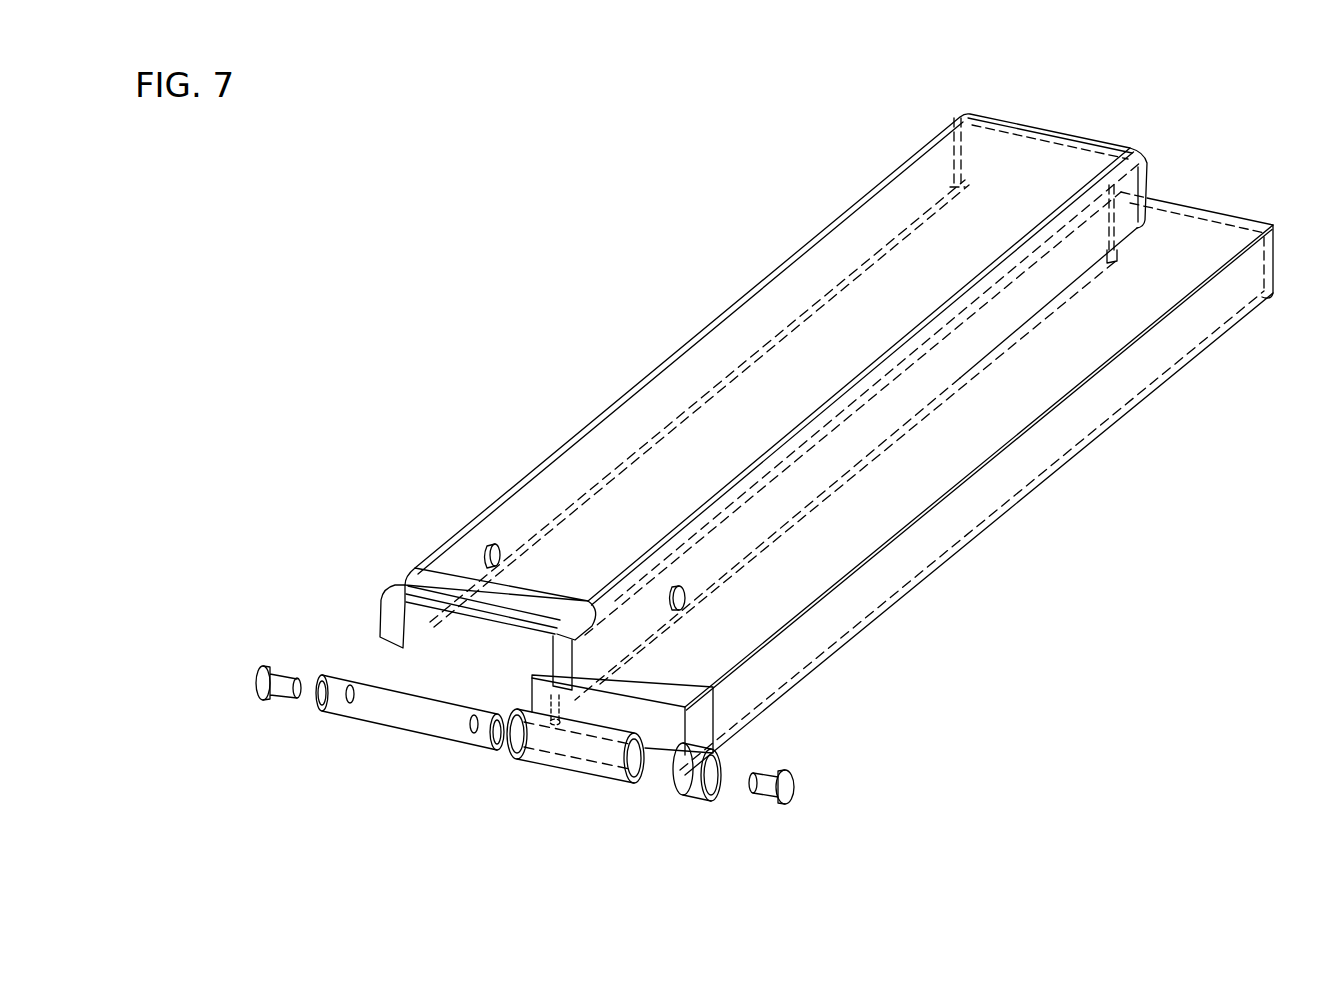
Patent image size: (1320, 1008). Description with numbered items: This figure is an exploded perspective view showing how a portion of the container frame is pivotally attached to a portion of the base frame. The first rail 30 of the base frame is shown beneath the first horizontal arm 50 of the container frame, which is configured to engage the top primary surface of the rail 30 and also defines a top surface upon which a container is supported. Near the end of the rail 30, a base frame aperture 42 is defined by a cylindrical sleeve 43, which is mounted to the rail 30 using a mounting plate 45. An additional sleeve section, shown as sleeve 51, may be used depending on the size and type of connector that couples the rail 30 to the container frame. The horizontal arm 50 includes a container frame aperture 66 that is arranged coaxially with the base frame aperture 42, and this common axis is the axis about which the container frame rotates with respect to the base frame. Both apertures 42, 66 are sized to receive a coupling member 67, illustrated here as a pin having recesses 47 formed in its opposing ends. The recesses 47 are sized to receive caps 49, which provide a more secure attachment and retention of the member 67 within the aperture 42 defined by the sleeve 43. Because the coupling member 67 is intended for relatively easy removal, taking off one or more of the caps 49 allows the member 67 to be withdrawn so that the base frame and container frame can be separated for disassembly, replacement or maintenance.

The first rail 30 is at (1193, 238).
The first horizontal arm 50 is at (985, 143).
The container frame aperture 66 is at (686, 598).
The recesses 47 is at (352, 683).
The coupling member 67 is at (388, 717).
The caps 49 is at (255, 695).
The cylindrical sleeve 43 is at (558, 763).
The base frame aperture 42 is at (628, 767).
The mounting plate 45 is at (660, 760).
The sleeve 51 is at (695, 795).